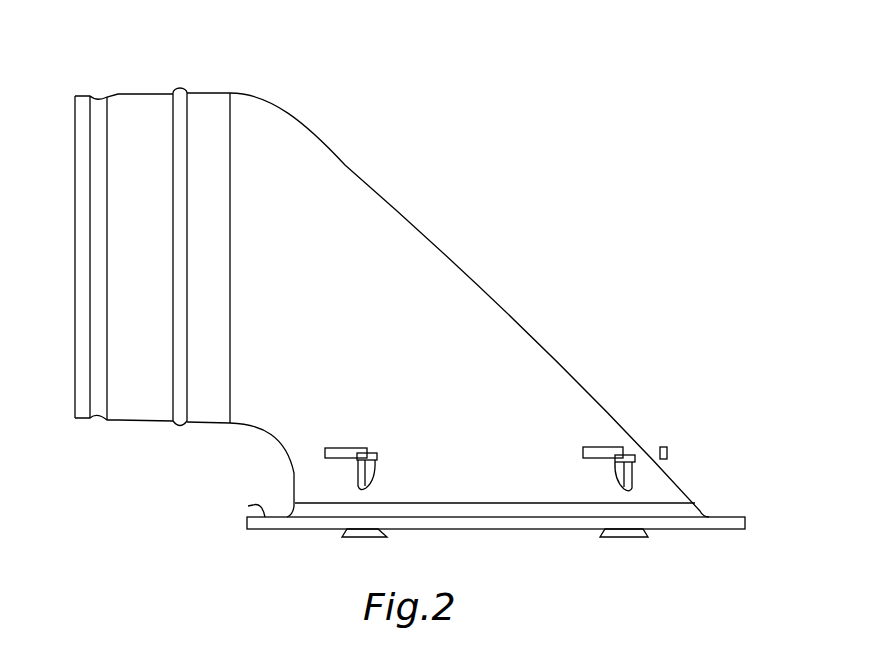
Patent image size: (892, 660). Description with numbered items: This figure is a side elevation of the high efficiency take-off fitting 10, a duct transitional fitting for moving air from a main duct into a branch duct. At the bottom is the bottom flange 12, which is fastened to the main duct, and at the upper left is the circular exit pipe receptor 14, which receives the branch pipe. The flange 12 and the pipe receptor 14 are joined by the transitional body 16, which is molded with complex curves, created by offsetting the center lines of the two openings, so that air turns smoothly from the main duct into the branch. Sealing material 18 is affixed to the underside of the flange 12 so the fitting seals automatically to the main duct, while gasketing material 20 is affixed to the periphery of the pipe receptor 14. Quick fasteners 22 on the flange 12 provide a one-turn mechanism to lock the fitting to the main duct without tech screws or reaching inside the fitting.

The high efficiency take-off fitting 10 is at (503, 189).
The bottom flange 12 is at (248, 506).
The circular exit pipe receptor 14 is at (144, 110).
The transitional body 16 is at (384, 328).
The sealing material 18 is at (305, 530).
The gasketing material 20 is at (182, 130).
The quick fastener 22 is at (325, 452).